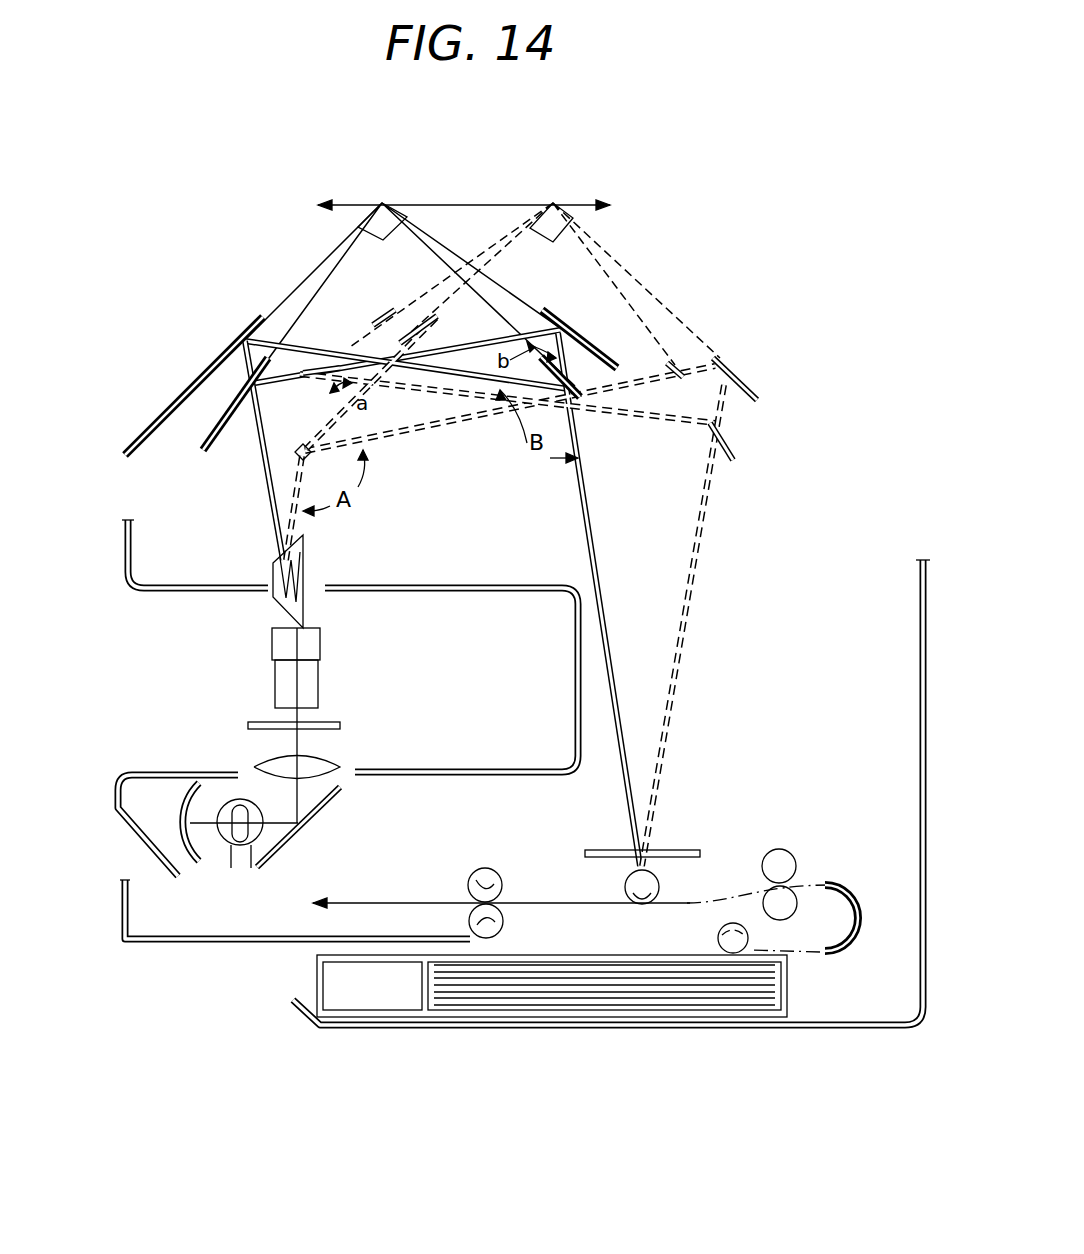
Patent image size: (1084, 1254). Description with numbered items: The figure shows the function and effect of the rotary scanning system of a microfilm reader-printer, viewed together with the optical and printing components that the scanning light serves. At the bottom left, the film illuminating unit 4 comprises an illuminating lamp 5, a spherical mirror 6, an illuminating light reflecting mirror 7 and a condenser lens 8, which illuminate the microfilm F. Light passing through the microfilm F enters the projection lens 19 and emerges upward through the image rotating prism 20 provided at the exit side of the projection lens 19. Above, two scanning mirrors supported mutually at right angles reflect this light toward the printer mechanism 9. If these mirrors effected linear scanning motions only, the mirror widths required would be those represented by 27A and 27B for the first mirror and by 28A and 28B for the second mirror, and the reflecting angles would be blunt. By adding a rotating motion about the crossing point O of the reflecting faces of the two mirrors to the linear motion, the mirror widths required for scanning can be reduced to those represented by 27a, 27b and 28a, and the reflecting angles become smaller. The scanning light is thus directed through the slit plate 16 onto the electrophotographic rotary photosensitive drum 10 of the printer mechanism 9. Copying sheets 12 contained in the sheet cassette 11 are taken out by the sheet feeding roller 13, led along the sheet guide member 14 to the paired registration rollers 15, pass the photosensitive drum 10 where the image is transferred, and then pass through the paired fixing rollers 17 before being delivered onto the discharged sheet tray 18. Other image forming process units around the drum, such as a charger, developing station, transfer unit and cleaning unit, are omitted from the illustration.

The film illuminating unit 4 is at (226, 786).
The illuminating lamp 5 is at (243, 848).
The spherical mirror 6 is at (197, 847).
The illuminating light reflecting mirror 7 is at (295, 847).
The condenser lens 8 is at (330, 762).
The printer mechanism 9 is at (708, 885).
The electrophotographic rotary photosensitive drum 10 is at (625, 882).
The sheet cassette 11 is at (520, 1012).
The copying sheets 12 is at (620, 992).
The sheet feeding roller 13 is at (718, 930).
The sheet guide member 14 is at (846, 942).
The paired registration rollers 15 is at (787, 866).
The slit plate 16 is at (672, 850).
The paired fixing rollers 17 is at (480, 873).
The discharged sheet tray 18 is at (189, 938).
The projection lens 19 is at (310, 672).
The image rotating prism 20 is at (296, 597).
The mirror width of scanning mirror for linear scanning 27A is at (158, 413).
The modified mirror width of scanning mirror 27a is at (238, 432).
The mirror width of scanning mirror for linear scanning 27B is at (397, 342).
The modified mirror width of scanning mirror 27b is at (340, 338).
The modified mirror width of scanning mirror 28a is at (582, 332).
The mirror width of scanning mirror for linear scanning 28A is at (567, 372).
The mirror width of scanning mirror for linear scanning 28B is at (748, 362).
The microfilm F is at (330, 724).
The crossing point of the reflecting faces O is at (382, 203).